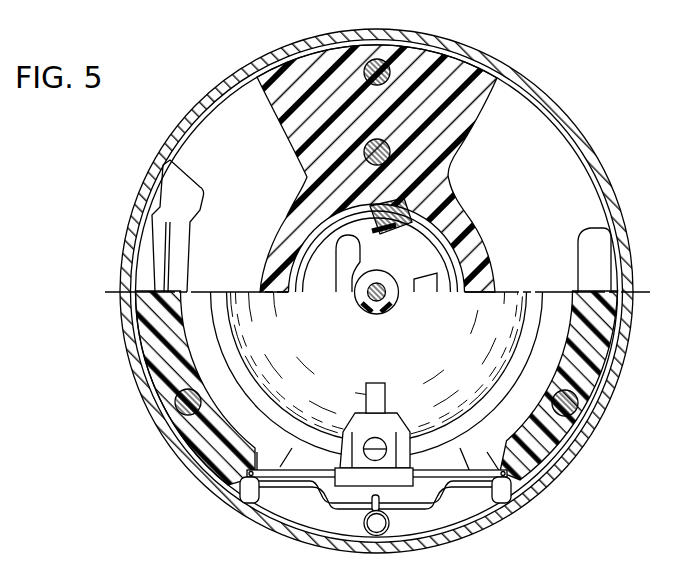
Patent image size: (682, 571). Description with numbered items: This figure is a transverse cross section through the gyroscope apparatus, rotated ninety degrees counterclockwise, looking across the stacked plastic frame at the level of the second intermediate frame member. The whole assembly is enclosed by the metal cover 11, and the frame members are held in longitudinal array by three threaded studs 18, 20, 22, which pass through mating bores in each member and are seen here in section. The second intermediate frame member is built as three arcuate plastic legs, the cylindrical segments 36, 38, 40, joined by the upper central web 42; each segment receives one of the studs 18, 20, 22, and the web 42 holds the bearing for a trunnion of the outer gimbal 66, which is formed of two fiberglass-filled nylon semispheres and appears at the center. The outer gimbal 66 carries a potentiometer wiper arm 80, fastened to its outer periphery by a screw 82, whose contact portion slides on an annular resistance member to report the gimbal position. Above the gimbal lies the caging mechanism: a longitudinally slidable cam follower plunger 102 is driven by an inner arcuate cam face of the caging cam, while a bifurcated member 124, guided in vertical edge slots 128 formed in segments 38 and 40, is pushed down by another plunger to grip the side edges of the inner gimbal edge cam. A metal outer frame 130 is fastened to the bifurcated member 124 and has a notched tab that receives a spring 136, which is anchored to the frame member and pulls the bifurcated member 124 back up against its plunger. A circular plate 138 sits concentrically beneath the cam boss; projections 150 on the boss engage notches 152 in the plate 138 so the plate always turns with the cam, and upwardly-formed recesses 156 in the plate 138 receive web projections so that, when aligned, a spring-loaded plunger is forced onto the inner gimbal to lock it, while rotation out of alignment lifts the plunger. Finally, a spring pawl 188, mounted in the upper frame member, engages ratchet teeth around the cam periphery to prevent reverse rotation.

The metal cover 11 is at (233, 82).
The stud 18 is at (379, 60).
The stud 20 is at (176, 404).
The stud 22 is at (575, 406).
The cylindrical segment 36 is at (487, 82).
The cylindrical segment 38 is at (210, 459).
The cylindrical segment 40 is at (614, 323).
The upper central web 42 is at (459, 221).
The outer gimbal 66 is at (247, 337).
The wiper arm 80 is at (384, 397).
The screw 82 is at (394, 421).
The cam follower plunger 102 is at (391, 152).
The bifurcated member 124 is at (283, 478).
The vertical edge slots 128 is at (237, 493).
The metal outer frame 130 is at (433, 503).
The spring 136 is at (374, 536).
The circular plate 138 is at (446, 250).
The projections 150 is at (400, 250).
The notches 152 is at (398, 235).
The recesses 156 is at (327, 268).
The spring pawl 188 is at (160, 264).